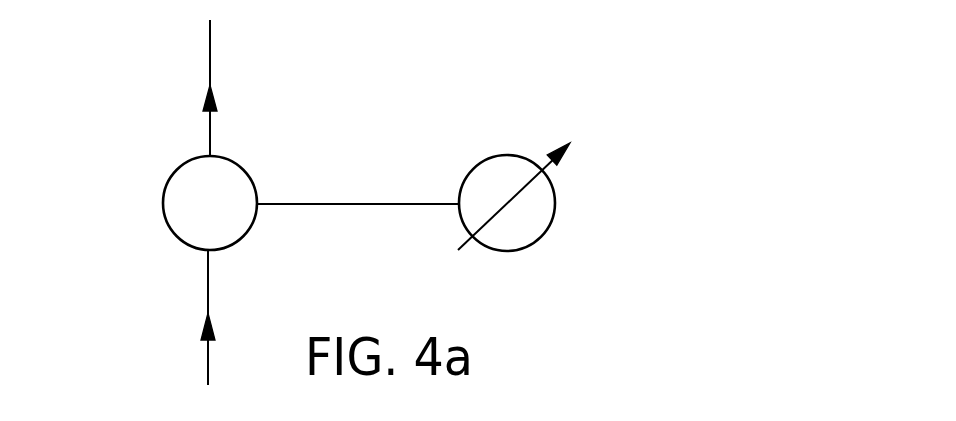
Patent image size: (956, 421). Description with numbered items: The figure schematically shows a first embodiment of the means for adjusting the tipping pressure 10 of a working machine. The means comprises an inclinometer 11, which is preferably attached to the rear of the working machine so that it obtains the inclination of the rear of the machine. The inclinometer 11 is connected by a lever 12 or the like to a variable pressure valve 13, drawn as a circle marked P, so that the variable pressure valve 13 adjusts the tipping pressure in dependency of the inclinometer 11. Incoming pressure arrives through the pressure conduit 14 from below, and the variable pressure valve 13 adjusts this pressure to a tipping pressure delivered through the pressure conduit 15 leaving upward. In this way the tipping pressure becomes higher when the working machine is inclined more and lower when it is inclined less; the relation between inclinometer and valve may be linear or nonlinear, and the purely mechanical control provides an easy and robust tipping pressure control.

The means for adjusting the tipping pressure 10 is at (542, 97).
The inclinometer 11 is at (555, 203).
The lever 12 is at (357, 204).
The variable pressure valve 13 is at (160, 203).
The pressure conduit 14 is at (208, 358).
The pressure conduit 15 is at (210, 58).